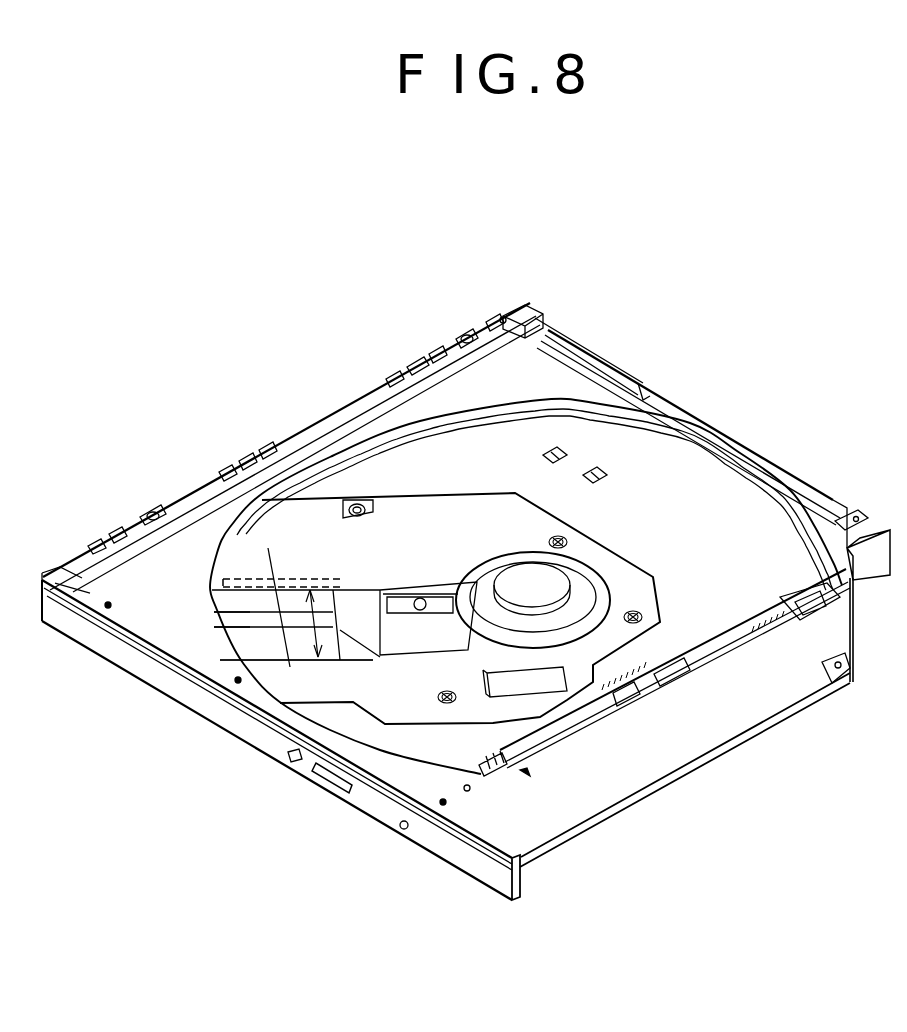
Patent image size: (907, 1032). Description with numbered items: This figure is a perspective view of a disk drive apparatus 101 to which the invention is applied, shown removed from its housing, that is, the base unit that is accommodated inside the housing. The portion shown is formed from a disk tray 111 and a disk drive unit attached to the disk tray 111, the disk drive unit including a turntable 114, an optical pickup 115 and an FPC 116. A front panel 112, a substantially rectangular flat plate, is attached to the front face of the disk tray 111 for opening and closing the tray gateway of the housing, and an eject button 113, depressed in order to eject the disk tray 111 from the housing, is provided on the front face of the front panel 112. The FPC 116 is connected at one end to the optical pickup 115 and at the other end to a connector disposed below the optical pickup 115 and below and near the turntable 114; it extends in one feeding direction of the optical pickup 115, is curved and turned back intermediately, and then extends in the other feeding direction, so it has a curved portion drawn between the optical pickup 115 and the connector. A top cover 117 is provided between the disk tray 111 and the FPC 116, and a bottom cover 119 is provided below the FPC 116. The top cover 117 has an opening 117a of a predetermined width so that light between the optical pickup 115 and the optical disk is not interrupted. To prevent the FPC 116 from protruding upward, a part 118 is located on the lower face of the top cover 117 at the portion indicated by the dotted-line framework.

The disk drive apparatus 101 is at (389, 313).
The disk tray 111 is at (155, 577).
The front panel 112 is at (250, 727).
The eject button 113 is at (336, 778).
The turntable 114 is at (530, 582).
The optical pickup 115 is at (533, 583).
The FPC 116 is at (240, 600).
The top cover 117 is at (322, 545).
The opening 117a is at (335, 628).
The part for preventing upward protrusion of the FPC 118 is at (253, 582).
The bottom cover 119 is at (257, 643).